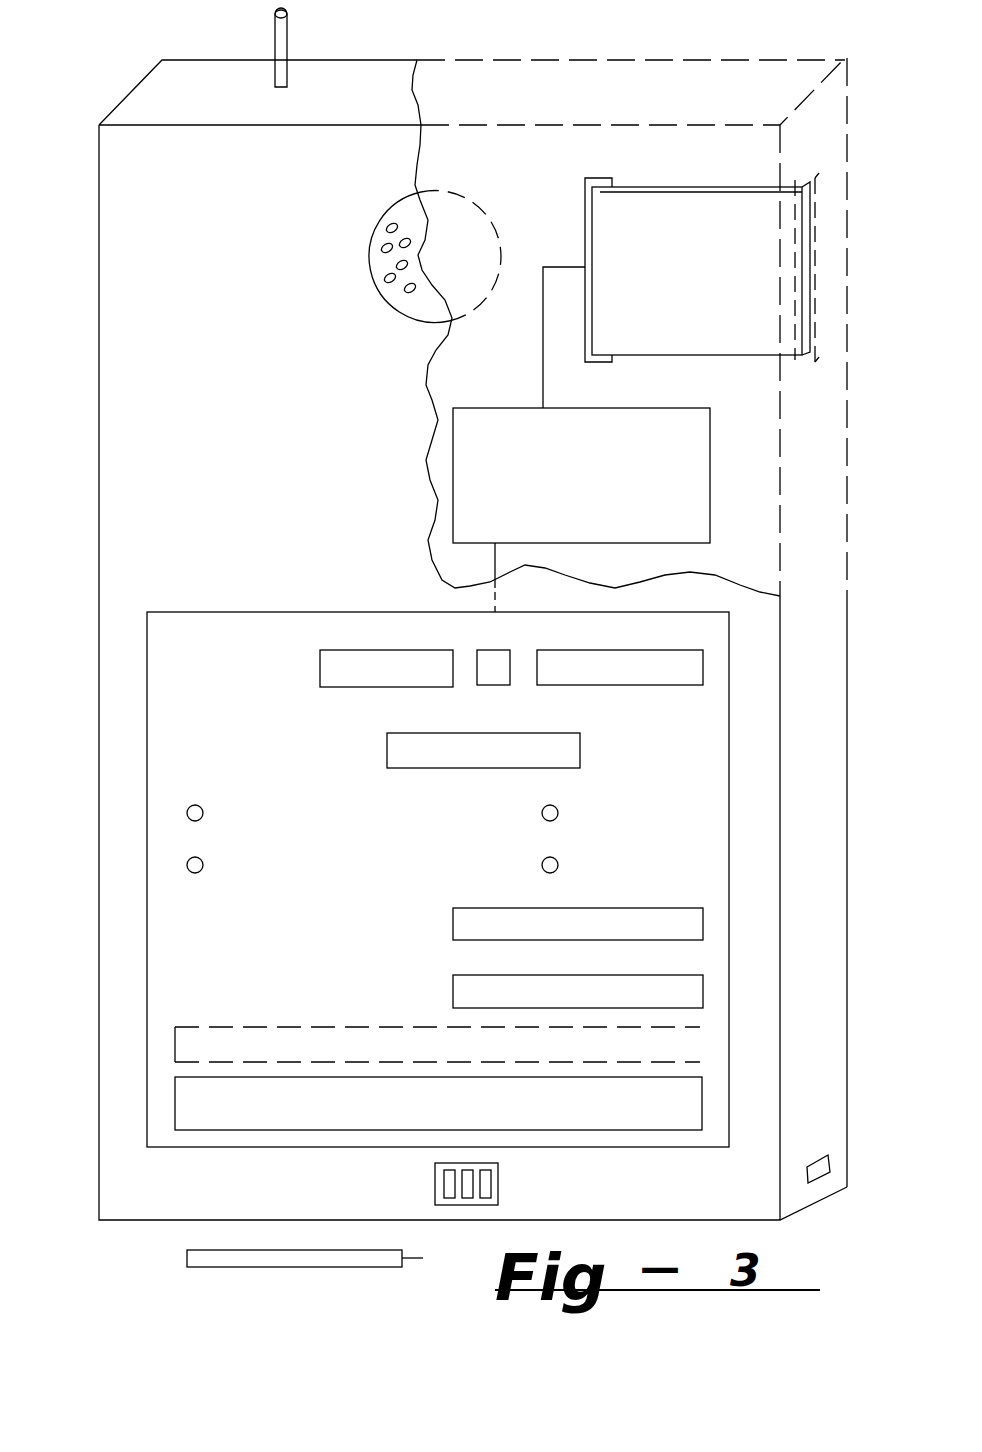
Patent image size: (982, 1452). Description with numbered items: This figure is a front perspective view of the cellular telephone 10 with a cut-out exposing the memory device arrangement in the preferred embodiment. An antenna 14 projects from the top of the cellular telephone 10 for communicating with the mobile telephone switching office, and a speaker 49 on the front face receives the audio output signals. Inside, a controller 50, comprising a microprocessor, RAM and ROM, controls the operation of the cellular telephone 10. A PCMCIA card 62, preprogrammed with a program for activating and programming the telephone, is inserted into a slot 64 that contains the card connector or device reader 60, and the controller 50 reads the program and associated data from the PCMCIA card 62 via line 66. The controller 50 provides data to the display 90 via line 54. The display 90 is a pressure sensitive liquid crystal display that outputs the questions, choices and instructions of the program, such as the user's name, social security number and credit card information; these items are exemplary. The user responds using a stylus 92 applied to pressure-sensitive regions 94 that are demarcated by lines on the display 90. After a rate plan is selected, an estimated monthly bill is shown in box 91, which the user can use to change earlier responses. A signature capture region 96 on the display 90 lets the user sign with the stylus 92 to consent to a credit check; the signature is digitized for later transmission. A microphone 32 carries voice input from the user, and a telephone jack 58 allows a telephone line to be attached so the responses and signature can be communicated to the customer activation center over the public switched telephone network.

The cellular telephone 10 is at (94, 292).
The antenna 14 is at (287, 31).
The speaker 49 is at (385, 268).
The controller 50 is at (506, 407).
The line 54 is at (494, 568).
The line 66 is at (543, 336).
The device reader 60 is at (598, 362).
The PCMCIA card 62 is at (692, 326).
The slot 64 is at (800, 362).
The display 90 is at (200, 610).
The pressure-sensitive regions 94 is at (430, 688).
The box 91 is at (212, 1025).
The signature capture region 96 is at (690, 1102).
The microphone 32 is at (498, 1178).
The RJ-11 jack 58 is at (828, 1154).
The stylus 92 is at (190, 1250).